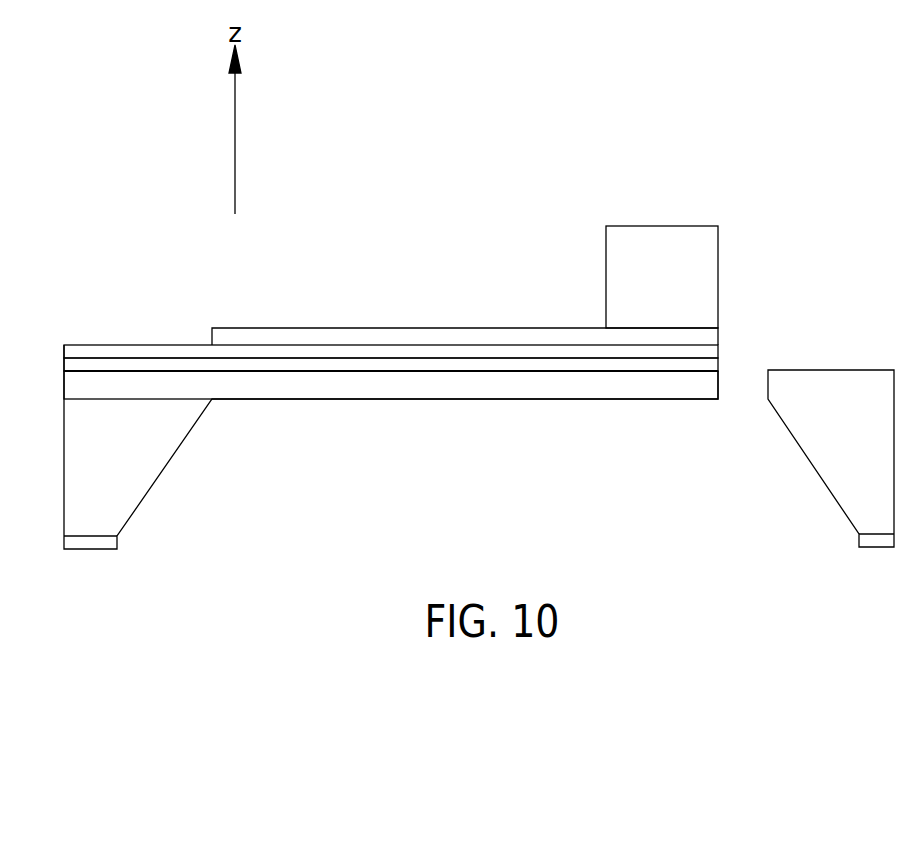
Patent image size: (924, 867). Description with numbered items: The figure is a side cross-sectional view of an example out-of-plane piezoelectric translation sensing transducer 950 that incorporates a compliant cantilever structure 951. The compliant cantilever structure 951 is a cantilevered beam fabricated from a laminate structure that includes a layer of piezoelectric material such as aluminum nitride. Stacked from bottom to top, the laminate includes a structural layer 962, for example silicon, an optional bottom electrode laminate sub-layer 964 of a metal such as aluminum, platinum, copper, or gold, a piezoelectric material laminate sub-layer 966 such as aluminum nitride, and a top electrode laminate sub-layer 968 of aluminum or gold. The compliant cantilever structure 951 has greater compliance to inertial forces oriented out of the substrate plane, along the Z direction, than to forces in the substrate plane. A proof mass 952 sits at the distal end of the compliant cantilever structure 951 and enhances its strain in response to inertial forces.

The out-of-plane piezoelectric translation sensing transducer 950 is at (427, 222).
The compliant cantilever structure 951 is at (347, 399).
The proof mass 952 is at (679, 274).
The structural layer 962 is at (428, 381).
The bottom electrode laminate sub-layer 964 is at (496, 363).
The piezoelectric material laminate sub-layer 966 is at (563, 350).
The top electrode laminate sub-layer 968 is at (263, 333).